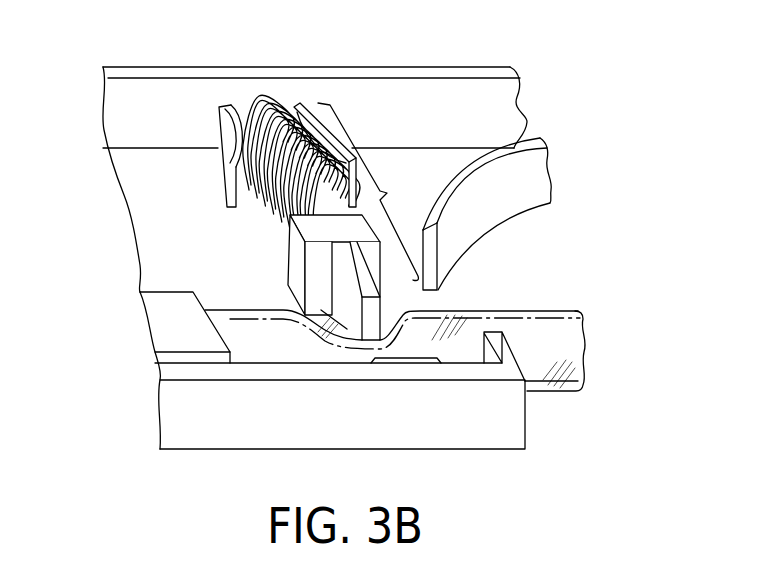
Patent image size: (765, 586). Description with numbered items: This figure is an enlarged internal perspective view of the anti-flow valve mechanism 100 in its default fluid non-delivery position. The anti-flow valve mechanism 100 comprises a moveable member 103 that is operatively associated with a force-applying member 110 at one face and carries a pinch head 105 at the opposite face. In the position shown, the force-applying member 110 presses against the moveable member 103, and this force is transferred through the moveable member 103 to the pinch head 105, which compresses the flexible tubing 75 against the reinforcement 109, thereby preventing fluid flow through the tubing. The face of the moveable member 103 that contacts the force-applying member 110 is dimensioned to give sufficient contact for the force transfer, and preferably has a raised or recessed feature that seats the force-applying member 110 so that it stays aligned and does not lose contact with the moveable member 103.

The flexible tubing 75 is at (545, 320).
The anti-flow valve mechanism 100 is at (385, 193).
The moveable member 103 is at (303, 227).
The pinch head 105 is at (345, 317).
The reinforcement 109 is at (405, 362).
The force-applying member 110 is at (262, 98).